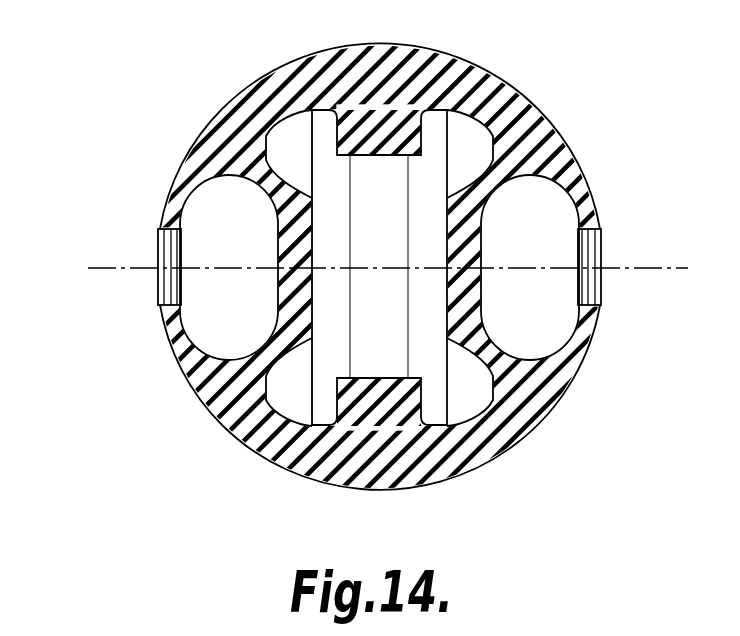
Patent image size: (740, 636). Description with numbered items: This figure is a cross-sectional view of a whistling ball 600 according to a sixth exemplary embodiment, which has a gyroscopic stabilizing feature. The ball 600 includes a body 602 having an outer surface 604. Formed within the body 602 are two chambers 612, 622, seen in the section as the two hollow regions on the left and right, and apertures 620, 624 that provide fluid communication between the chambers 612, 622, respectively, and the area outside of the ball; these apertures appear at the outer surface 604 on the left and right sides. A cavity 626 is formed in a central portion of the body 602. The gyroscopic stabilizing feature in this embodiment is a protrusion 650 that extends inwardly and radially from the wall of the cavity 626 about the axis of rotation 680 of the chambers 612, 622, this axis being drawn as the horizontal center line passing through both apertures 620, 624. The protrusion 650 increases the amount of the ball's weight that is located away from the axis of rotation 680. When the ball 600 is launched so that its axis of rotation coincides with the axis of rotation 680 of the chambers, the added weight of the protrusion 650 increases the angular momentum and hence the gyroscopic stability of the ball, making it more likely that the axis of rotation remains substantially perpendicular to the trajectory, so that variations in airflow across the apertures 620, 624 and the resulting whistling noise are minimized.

The ball 600 is at (127, 107).
The body 602 is at (480, 72).
The outer surface 604 is at (190, 388).
The chamber 612 is at (215, 212).
The chamber 622 is at (520, 313).
The cavity 626 is at (467, 150).
The aperture 620 is at (160, 252).
The aperture 624 is at (592, 248).
The protrusion 650 is at (387, 370).
The axis of rotation 680 is at (646, 268).